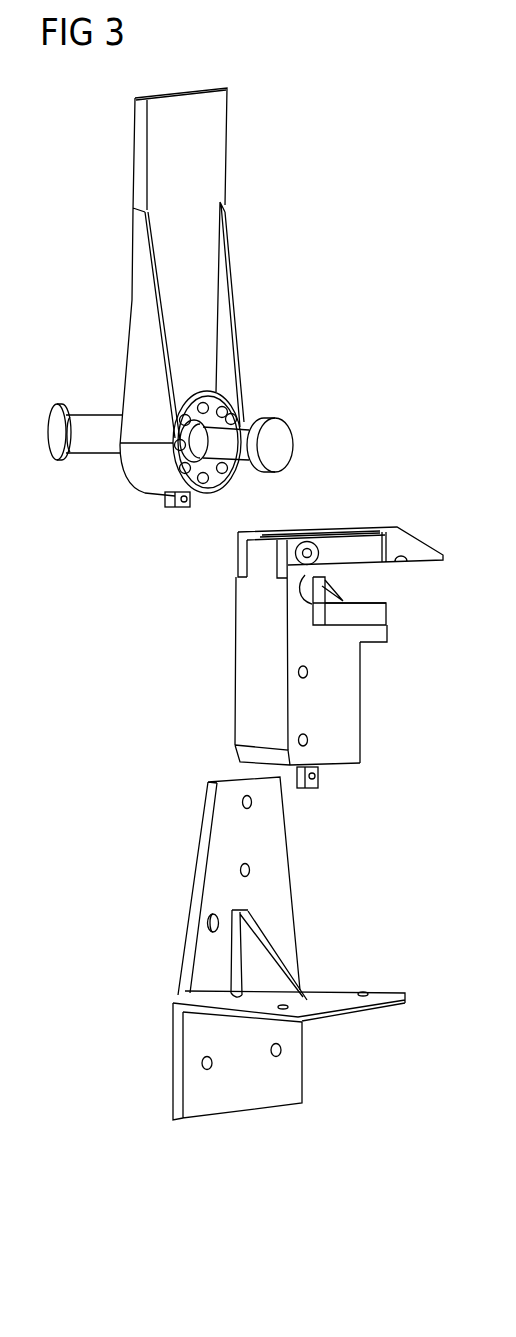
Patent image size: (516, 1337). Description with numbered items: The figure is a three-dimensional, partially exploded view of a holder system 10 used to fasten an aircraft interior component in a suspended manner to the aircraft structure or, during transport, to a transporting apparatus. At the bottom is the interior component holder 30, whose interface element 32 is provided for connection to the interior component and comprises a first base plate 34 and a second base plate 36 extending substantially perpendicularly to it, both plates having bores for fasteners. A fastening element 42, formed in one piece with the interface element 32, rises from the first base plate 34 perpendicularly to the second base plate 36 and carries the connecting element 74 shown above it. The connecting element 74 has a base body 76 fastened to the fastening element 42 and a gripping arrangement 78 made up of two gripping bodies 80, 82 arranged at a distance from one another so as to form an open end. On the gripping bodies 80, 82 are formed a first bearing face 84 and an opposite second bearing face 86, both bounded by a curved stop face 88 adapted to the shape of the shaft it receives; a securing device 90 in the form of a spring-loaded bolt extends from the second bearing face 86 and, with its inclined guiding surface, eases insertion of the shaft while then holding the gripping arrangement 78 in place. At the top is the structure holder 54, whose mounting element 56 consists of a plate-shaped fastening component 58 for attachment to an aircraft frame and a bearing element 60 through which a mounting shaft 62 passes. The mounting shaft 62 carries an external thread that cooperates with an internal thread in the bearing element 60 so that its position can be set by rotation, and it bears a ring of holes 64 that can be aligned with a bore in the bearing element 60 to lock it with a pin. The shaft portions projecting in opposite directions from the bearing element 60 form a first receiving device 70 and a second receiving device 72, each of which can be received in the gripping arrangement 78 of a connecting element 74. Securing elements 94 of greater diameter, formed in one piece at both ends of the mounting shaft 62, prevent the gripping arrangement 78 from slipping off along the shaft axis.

The holder system 10 is at (418, 178).
The interior component holder 30 is at (130, 1003).
The interface element 32 is at (346, 1066).
The first base plate 34 is at (232, 1100).
The second base plate 36 is at (367, 1003).
The fastening element 42 is at (280, 853).
The structure holder 54 is at (270, 305).
The mounting element 56 is at (243, 353).
The plate-shaped fastening component 58 is at (212, 143).
The bearing element 60 is at (143, 478).
The mounting shaft 62 is at (105, 418).
The ring of holes 64 is at (202, 389).
The first receiving device 70 is at (243, 412).
The second receiving device 72 is at (107, 455).
The connecting element 74 is at (420, 668).
The base body 76 is at (348, 710).
The gripping arrangement 78 is at (405, 518).
The gripping body 80 is at (357, 548).
The gripping body 82 is at (371, 633).
The first bearing face 84 is at (388, 613).
The second bearing face 86 is at (352, 597).
The stop face 88 is at (305, 605).
The securing device 90 is at (322, 593).
The securing element 94 is at (278, 447).